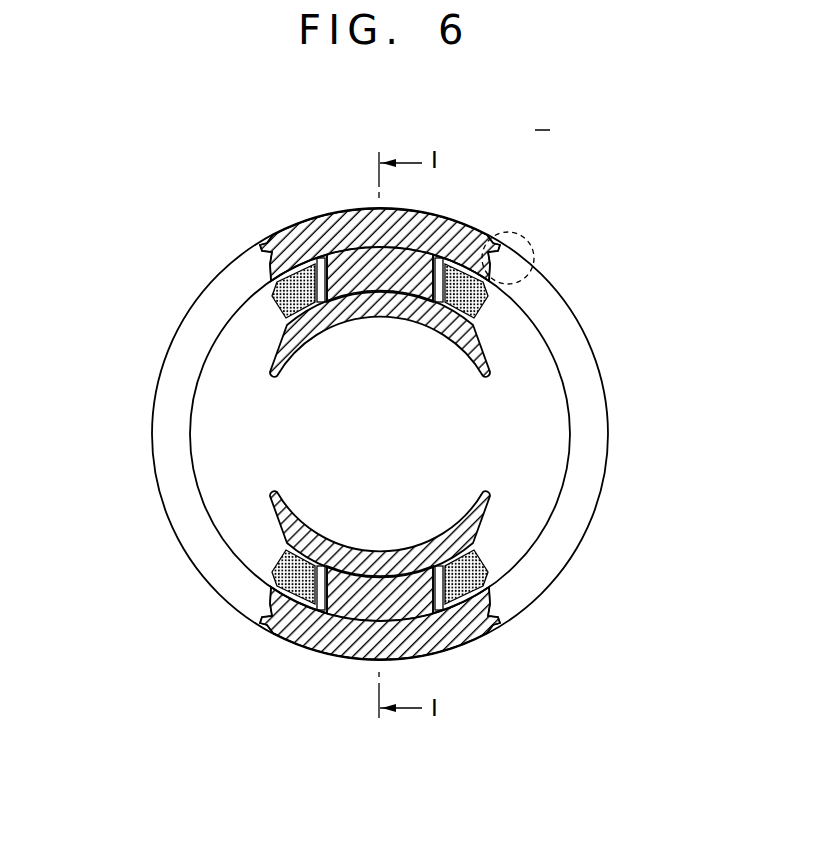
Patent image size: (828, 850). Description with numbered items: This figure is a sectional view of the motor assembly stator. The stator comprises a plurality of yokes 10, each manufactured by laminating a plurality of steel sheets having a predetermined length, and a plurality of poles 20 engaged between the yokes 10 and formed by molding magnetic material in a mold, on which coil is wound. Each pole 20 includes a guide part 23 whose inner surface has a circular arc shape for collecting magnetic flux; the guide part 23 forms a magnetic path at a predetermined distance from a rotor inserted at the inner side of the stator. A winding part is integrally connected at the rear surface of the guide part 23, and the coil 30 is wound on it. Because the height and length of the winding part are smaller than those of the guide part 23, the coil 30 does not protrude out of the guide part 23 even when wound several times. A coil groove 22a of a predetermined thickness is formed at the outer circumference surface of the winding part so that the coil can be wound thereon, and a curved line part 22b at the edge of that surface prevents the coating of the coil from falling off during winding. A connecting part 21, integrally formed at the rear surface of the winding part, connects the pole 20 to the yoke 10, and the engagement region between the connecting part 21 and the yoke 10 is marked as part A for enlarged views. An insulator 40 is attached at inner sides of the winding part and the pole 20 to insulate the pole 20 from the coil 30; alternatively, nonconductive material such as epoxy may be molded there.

The yoke 10 is at (150, 400).
The pole 20 is at (457, 211).
The connecting part 21 is at (313, 236).
The coil groove 22a is at (367, 258).
The curved line part 22b is at (264, 247).
The guide part 23 is at (487, 357).
The coil 30 is at (277, 290).
The insulator 40 is at (283, 323).
The "A" part A is at (519, 236).